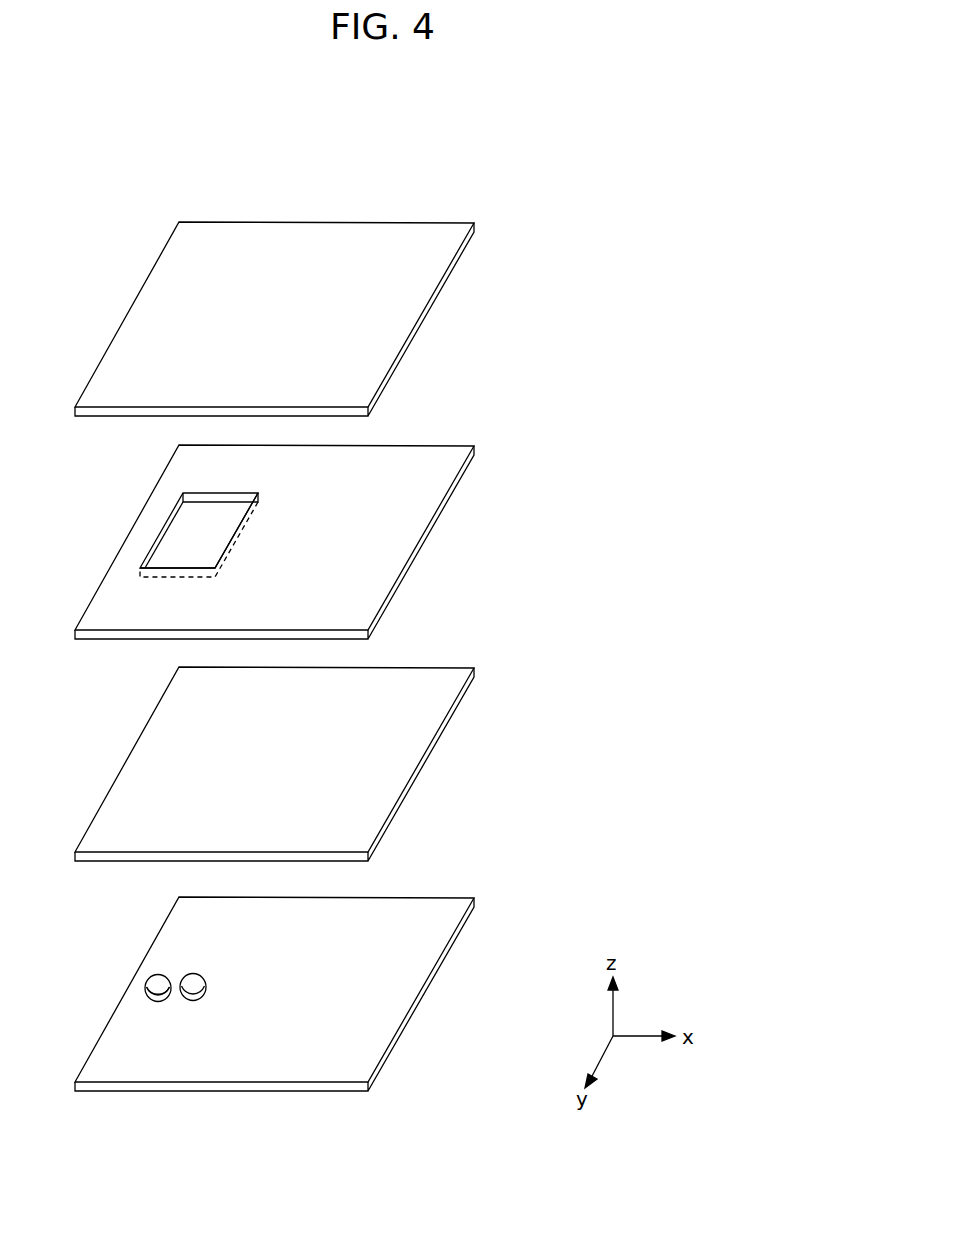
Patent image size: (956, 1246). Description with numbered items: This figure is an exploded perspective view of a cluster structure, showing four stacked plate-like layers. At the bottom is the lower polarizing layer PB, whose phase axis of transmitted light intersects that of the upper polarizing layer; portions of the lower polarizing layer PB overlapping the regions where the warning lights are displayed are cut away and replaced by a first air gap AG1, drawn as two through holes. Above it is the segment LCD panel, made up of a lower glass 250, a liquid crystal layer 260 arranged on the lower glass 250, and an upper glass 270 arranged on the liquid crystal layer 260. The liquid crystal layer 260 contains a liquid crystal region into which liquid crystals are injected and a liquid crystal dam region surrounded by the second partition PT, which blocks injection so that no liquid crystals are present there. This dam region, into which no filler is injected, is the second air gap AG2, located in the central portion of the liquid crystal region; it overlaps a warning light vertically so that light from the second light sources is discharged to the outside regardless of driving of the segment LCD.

The upper glass 270 is at (427, 308).
The liquid crystal layer 260 is at (427, 530).
The lower glass 250 is at (427, 754).
The lower polarizing layer PB is at (427, 982).
The second partition PT is at (166, 523).
The second air gap AG2 is at (181, 554).
The first air gap AG1 is at (157, 996).